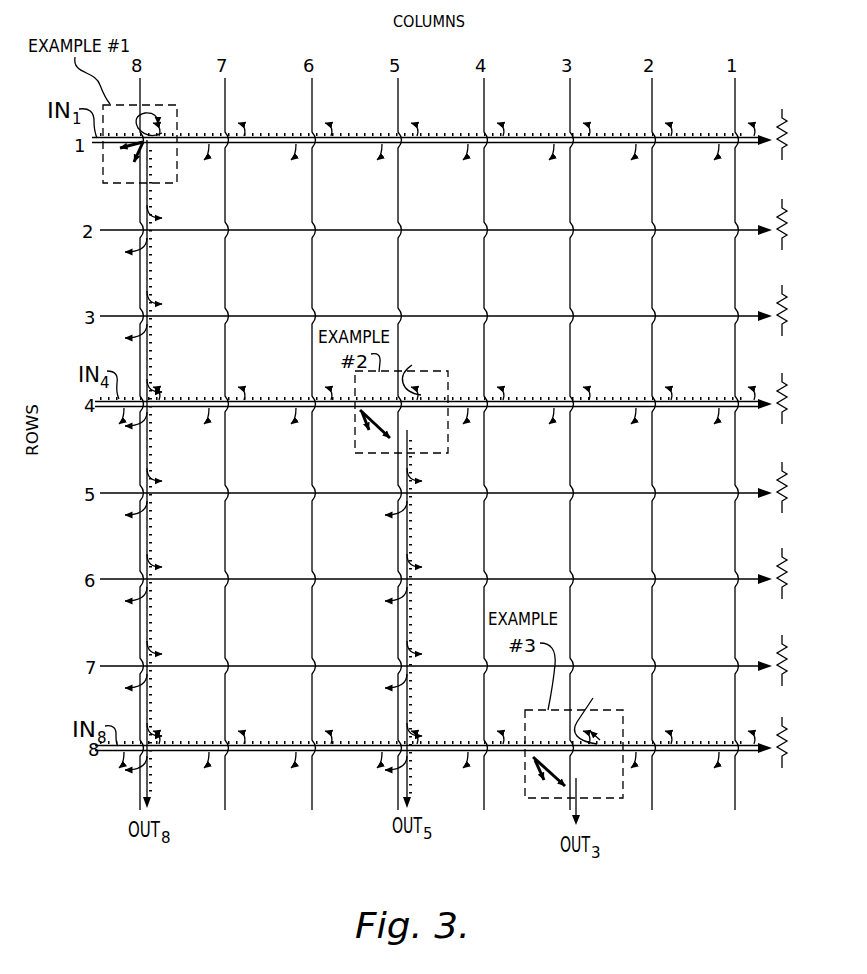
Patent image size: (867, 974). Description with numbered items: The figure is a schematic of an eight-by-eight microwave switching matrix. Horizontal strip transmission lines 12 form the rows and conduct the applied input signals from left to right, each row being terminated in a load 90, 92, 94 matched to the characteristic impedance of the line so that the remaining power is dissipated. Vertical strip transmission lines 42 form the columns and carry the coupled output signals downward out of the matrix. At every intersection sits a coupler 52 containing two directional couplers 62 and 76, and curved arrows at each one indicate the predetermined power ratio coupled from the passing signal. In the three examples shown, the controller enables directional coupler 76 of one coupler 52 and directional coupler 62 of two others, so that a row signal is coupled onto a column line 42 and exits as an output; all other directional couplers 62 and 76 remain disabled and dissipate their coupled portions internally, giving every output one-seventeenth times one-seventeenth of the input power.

The horizontal strip transmission line 12 is at (439, 472).
The vertical strip transmission line 42 is at (432, 444).
The coupler 52 is at (374, 421).
The directional coupler 62 is at (311, 480).
The directional coupler 76 is at (368, 421).
The load 90 is at (780, 115).
The load 92 is at (782, 212).
The load 94 is at (782, 768).